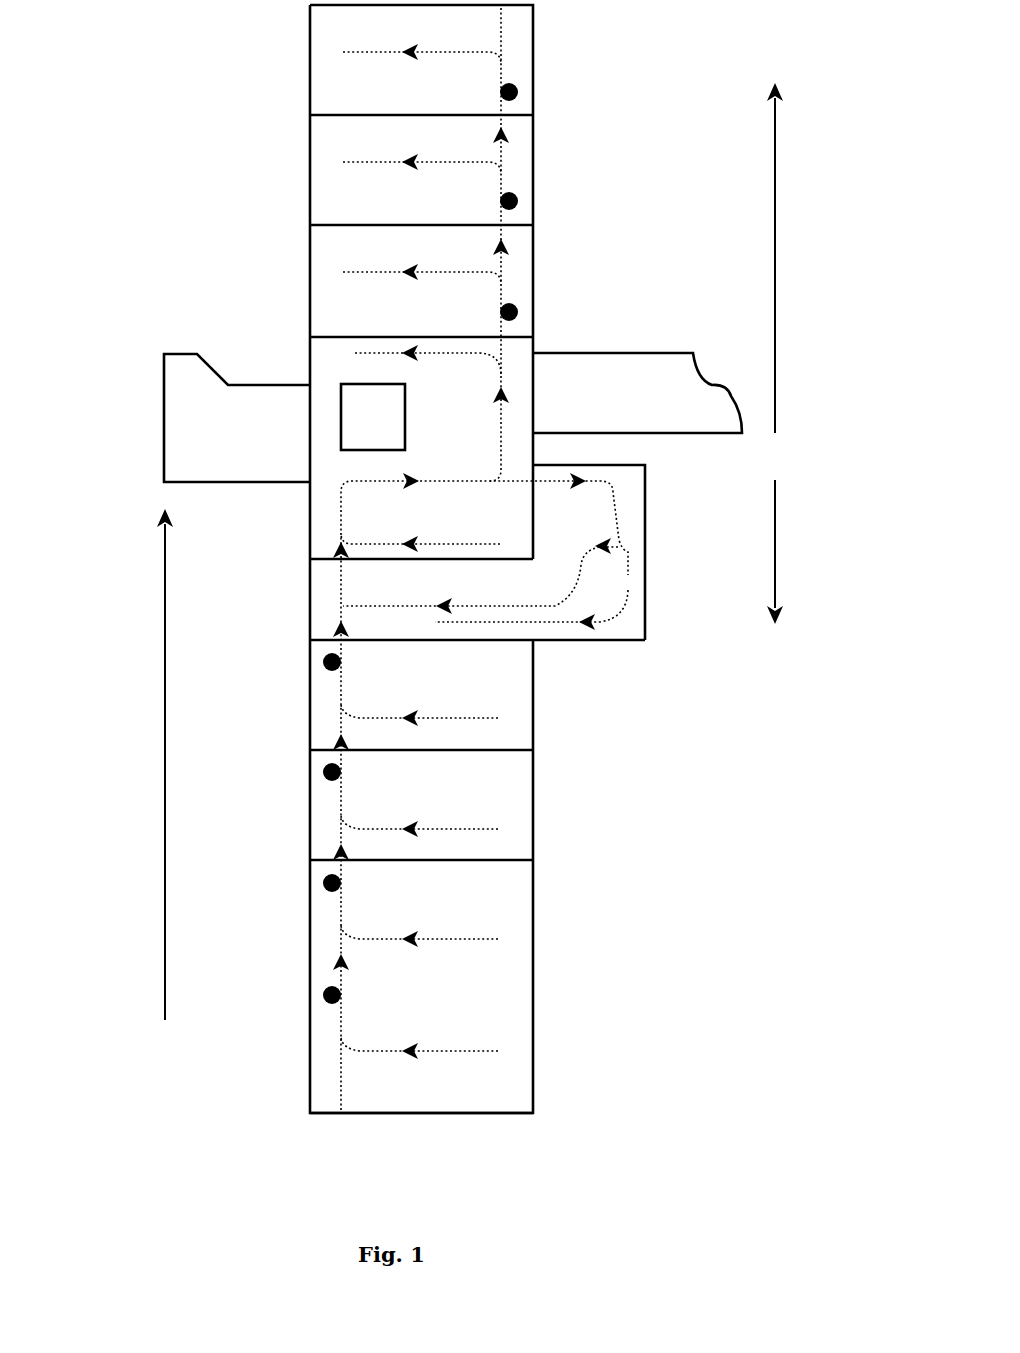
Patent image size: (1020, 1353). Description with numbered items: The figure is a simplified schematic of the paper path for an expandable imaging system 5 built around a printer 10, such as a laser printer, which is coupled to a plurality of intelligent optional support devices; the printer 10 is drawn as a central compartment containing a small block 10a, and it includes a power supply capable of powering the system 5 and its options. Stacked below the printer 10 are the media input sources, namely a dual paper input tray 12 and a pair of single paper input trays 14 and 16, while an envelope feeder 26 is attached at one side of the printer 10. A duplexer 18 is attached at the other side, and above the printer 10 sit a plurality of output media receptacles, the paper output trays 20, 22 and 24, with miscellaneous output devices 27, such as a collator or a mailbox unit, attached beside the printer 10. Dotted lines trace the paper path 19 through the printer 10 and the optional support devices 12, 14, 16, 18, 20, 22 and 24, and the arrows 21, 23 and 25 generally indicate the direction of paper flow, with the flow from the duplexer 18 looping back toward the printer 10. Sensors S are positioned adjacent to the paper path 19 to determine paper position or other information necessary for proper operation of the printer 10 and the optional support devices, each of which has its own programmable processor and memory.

The expandable imaging system 5 is at (125, 193).
The printer 10 is at (325, 371).
The controller 10a is at (373, 417).
The dual paper input tray 12 is at (517, 907).
The single paper input tray 14 is at (517, 797).
The single paper input tray 16 is at (517, 687).
The duplexer 18 is at (628, 495).
The paper path 19 is at (373, 52).
The paper output tray 20 is at (327, 307).
The arrow 21 is at (778, 558).
The paper output tray 22 is at (327, 195).
The arrow 23 is at (160, 632).
The paper output tray 24 is at (327, 84).
The arrow 25 is at (778, 290).
The envelope feeder 26 is at (237, 418).
The miscellaneous output devices 27 is at (637, 393).
The sensors S is at (517, 86).